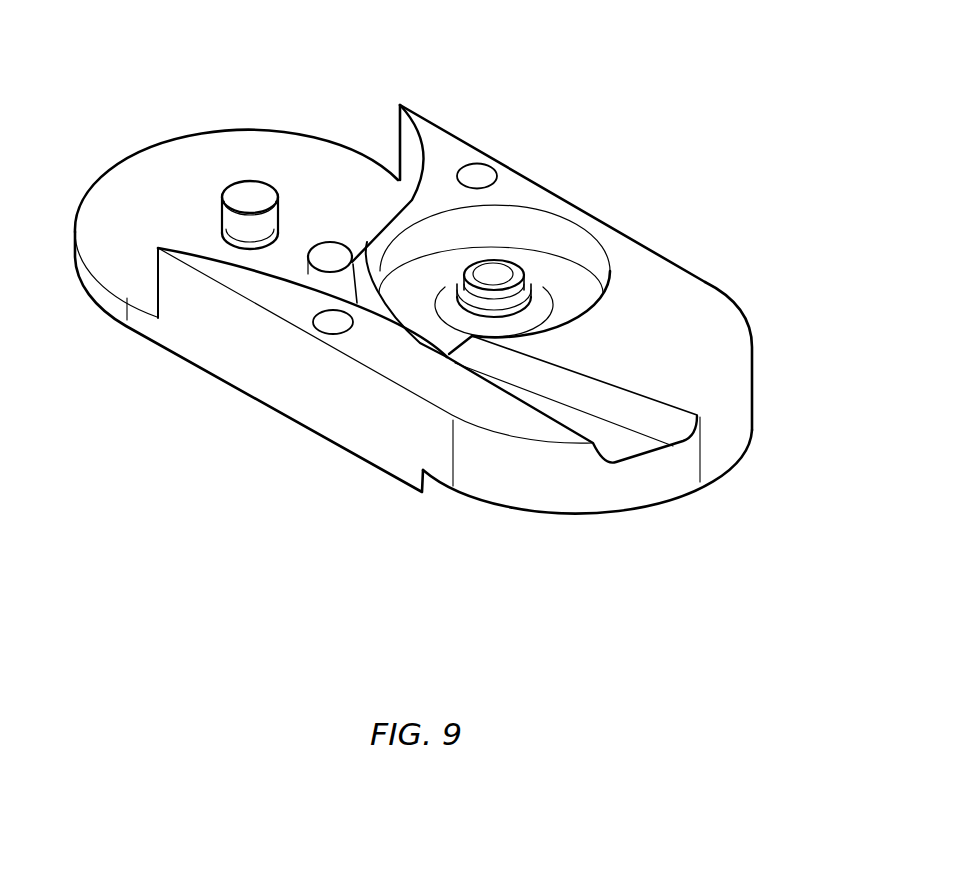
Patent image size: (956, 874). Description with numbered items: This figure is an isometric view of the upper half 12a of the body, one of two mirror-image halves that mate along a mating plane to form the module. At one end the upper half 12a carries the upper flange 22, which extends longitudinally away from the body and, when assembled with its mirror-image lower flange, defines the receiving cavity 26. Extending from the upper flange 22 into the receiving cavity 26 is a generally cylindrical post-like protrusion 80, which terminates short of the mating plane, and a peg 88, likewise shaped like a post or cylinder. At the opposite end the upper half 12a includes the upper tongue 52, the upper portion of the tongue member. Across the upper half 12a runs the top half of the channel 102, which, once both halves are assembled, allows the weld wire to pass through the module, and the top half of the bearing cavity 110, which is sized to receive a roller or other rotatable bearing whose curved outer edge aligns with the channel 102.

The upper half 12a is at (654, 250).
The upper flange 22 is at (258, 130).
The receiving cavity 26 is at (306, 172).
The upper tongue 52 is at (733, 343).
The protrusion 80 is at (247, 195).
The peg 88 is at (333, 260).
The channel 102 is at (540, 393).
The bearing cavity 110 is at (567, 243).